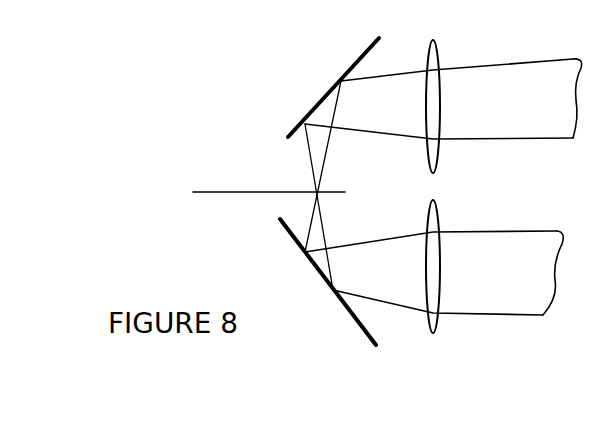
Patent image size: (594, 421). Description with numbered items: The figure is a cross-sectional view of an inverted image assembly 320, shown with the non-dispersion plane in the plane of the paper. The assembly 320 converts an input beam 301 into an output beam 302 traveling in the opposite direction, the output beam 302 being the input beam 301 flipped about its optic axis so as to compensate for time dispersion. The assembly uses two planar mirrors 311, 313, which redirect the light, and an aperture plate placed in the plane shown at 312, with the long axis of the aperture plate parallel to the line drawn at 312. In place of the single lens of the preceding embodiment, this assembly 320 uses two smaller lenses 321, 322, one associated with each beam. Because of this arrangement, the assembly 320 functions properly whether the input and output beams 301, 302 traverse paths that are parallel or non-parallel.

The image assembly 320 is at (114, 119).
The planar mirror 311 is at (359, 57).
The aperture plate plane 312 is at (197, 192).
The planar mirror 313 is at (357, 326).
The lens 321 is at (435, 158).
The lens 322 is at (435, 318).
The input beam 301 is at (538, 314).
The output beam 302 is at (538, 136).